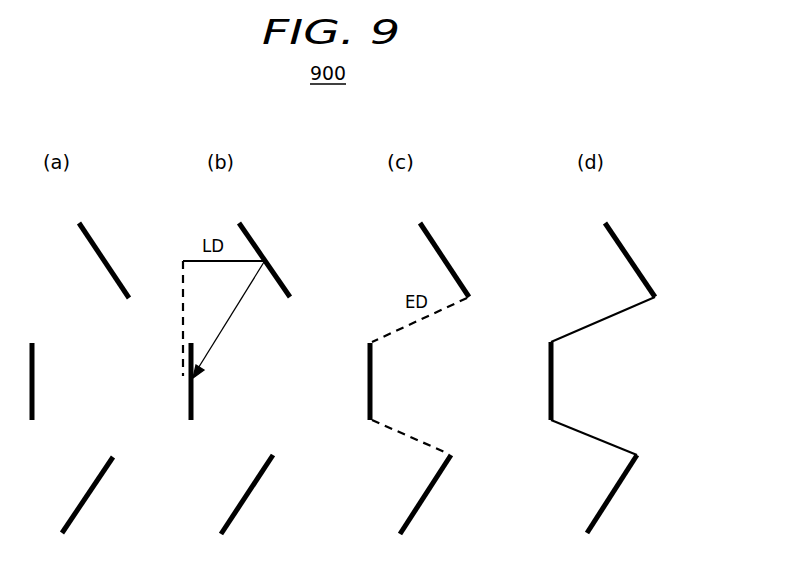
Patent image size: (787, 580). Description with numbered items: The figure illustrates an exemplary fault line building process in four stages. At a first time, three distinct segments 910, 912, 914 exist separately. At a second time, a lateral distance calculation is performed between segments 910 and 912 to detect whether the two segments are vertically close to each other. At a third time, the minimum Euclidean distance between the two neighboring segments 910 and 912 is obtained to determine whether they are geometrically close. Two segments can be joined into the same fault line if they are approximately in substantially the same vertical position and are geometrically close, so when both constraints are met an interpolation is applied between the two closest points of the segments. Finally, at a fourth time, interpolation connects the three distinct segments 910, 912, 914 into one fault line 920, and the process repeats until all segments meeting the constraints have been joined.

The segment 910 is at (93, 237).
The segment 912 is at (34, 381).
The segment 914 is at (84, 506).
The fault line 920 is at (609, 505).